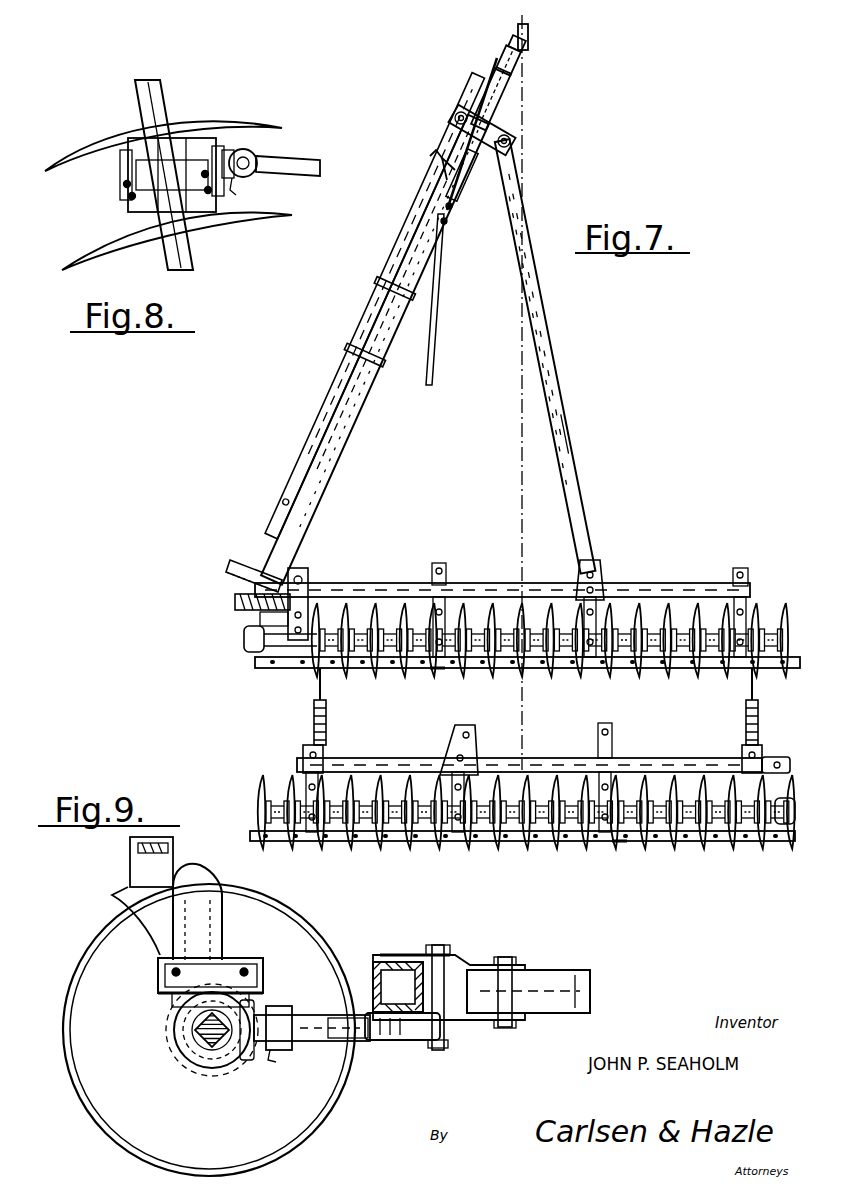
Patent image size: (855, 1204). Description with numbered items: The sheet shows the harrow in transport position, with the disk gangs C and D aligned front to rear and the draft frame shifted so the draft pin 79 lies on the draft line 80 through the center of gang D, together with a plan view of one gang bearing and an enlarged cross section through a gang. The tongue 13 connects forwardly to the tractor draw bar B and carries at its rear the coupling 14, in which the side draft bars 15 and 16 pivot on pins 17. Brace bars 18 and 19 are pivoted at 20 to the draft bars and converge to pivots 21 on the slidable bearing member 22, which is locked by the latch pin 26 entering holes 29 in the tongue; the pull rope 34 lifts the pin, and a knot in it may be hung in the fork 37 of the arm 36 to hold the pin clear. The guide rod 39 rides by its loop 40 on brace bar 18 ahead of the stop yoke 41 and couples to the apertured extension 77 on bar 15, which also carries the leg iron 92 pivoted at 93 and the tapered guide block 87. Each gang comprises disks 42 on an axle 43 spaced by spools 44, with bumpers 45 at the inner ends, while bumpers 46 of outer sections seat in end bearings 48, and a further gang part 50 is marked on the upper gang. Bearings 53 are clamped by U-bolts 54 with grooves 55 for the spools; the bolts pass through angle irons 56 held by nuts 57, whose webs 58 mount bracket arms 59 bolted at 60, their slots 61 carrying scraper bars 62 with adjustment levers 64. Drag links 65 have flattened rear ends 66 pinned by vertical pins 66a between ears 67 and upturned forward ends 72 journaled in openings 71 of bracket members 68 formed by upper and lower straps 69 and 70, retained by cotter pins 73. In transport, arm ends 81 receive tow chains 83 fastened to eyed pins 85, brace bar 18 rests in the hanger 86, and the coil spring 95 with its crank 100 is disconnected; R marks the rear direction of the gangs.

In FIG. 7, the tongue 13 is at (333, 447).
In FIG. 7, the coupling 14 is at (240, 580).
In FIG. 7, the side draft bar 15 is at (692, 760).
In FIG. 7, the side draft bar 16 is at (558, 376).
In FIG. 9, the side draft bar 16 is at (374, 968).
In FIG. 7, the pivot pin 17 is at (233, 565).
In FIG. 7, the brace bar 18 is at (325, 410).
In FIG. 7, the brace bar 19 is at (578, 488).
In FIG. 9, the brace bar 19 is at (560, 971).
In FIG. 7, the pivotal connection 20 is at (594, 566).
In FIG. 9, the pivotal connection 20 is at (512, 962).
In FIG. 7, the pivot 21 is at (455, 118).
In FIG. 7, the slidable bearing member 22 is at (508, 129).
In FIG. 7, the latch pin 26 is at (474, 150).
In FIG. 7, the holes 29 is at (448, 222).
In FIG. 7, the pull rope 34 is at (495, 66).
In FIG. 7, the arm 36 is at (498, 124).
In FIG. 7, the fork 37 is at (502, 110).
In FIG. 7, the guide rod 39 is at (441, 294).
In FIG. 7, the loop 40 is at (436, 154).
In FIG. 7, the stop yoke 41 is at (353, 359).
In FIG. 7, the disk 42 is at (378, 604).
In FIG. 8, the disk 42 is at (225, 120).
In FIG. 9, the disk 42 is at (290, 1123).
In FIG. 8, the axle 43 is at (153, 72).
In FIG. 9, the axle 43 is at (205, 1045).
In FIG. 7, the spacing spool 44 is at (766, 618).
In FIG. 8, the spacing spool 44 is at (130, 228).
In FIG. 9, the spacing spool 44 is at (195, 1040).
In FIG. 7, the bumper 45 is at (258, 650).
In FIG. 7, the bumper 46 is at (506, 846).
In FIG. 7, the end bearing 48 is at (541, 670).
In FIG. 7, the spacer 50 is at (516, 670).
In FIG. 7, the bearing 53 is at (585, 668).
In FIG. 8, the bearing 53 is at (104, 172).
In FIG. 9, the bearing 53 is at (180, 1003).
In FIG. 8, the U-bolt 54 is at (124, 185).
In FIG. 9, the U-bolt 54 is at (228, 1062).
In FIG. 8, the groove 55 is at (130, 197).
In FIG. 9, the groove 55 is at (190, 1027).
In FIG. 9, the angle iron 56 is at (252, 1002).
In FIG. 9, the nut 57 is at (262, 975).
In FIG. 9, the web 58 is at (240, 968).
In FIG. 9, the bracket arm 59 is at (200, 884).
In FIG. 9, the bolt 60 is at (188, 965).
In FIG. 9, the slot 61 is at (172, 846).
In FIG. 7, the scraper bar 62 is at (346, 669).
In FIG. 9, the scraper bar 62 is at (138, 848).
In FIG. 7, the adjustment lever 64 is at (428, 670).
In FIG. 7, the drag link 65 is at (452, 612).
In FIG. 8, the drag link 65 is at (318, 167).
In FIG. 9, the drag link 65 is at (352, 1042).
In FIG. 8, the flattened rear end 66 is at (250, 152).
In FIG. 9, the flattened rear end 66 is at (300, 1024).
In FIG. 8, the vertical pin 66a is at (232, 192).
In FIG. 9, the vertical pin 66a is at (268, 1062).
In FIG. 8, the ear 67 is at (240, 180).
In FIG. 9, the ear 67 is at (285, 1010).
In FIG. 9, the bracket member 68 is at (478, 955).
In FIG. 9, the upper strap 69 is at (416, 954).
In FIG. 9, the lower strap 70 is at (420, 1042).
In FIG. 9, the bearing opening 71 is at (440, 955).
In FIG. 7, the upwardly turned forward end 72 is at (441, 566).
In FIG. 9, the upwardly turned forward end 72 is at (460, 1022).
In FIG. 9, the cotter pin 73 is at (466, 954).
In FIG. 7, the apertured extension 77 is at (609, 745).
In FIG. 7, the draft pin 79 is at (528, 60).
In FIG. 7, the draft line 80 is at (522, 445).
In FIG. 7, the extended arm end 81 is at (318, 688).
In FIG. 7, the tow chain 83 is at (326, 722).
In FIG. 7, the eyed pin 85 is at (322, 748).
In FIG. 7, the hanger 86 is at (378, 291).
In FIG. 7, the guide block 87 is at (788, 763).
In FIG. 7, the leg iron 92 is at (478, 760).
In FIG. 7, the pivot 93 is at (538, 756).
In FIG. 7, the coil spring 95 is at (262, 620).
In FIG. 7, the crank 100 is at (240, 604).
In FIG. 7, the draw bar B is at (536, 36).
In FIG. 7, the disk gang C is at (414, 860).
In FIG. 7, the disk gang D is at (402, 683).
In FIG. 7, the direction R is at (585, 442).